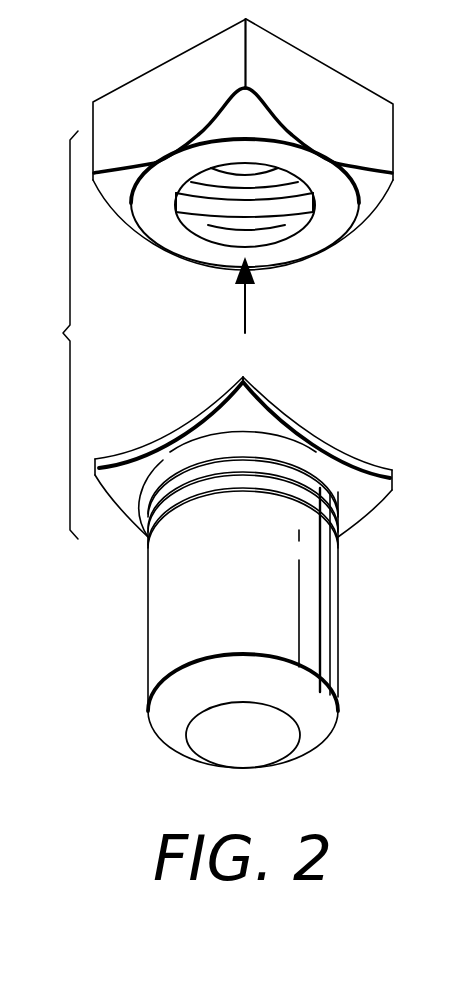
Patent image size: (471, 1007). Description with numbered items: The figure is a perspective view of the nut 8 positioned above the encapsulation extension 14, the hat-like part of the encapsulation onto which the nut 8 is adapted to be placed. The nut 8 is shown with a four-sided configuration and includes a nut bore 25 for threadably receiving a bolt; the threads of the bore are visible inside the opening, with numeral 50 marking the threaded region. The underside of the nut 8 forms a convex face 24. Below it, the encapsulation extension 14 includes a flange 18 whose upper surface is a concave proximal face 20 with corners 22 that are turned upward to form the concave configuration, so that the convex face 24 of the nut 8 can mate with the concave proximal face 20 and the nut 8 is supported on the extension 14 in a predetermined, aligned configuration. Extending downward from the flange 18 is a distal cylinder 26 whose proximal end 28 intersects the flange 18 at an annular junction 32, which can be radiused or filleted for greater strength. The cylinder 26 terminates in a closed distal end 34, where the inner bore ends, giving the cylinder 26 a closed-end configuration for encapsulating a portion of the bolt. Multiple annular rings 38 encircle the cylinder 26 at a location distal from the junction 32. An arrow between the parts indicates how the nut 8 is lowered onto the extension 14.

The nut 8 is at (245, 162).
The encapsulation extension 14 is at (266, 554).
The flange 18 is at (193, 426).
The concave proximal face 20 is at (289, 424).
The corners 22 is at (244, 378).
The convex face 24 is at (357, 222).
The nut bore 25 is at (287, 226).
The distal cylinder 26 is at (258, 610).
The proximal end 28 is at (160, 447).
The annular junction 32 is at (130, 512).
The closed distal end 34 is at (257, 749).
The annular rings 38 is at (212, 480).
The threads 50 is at (210, 226).